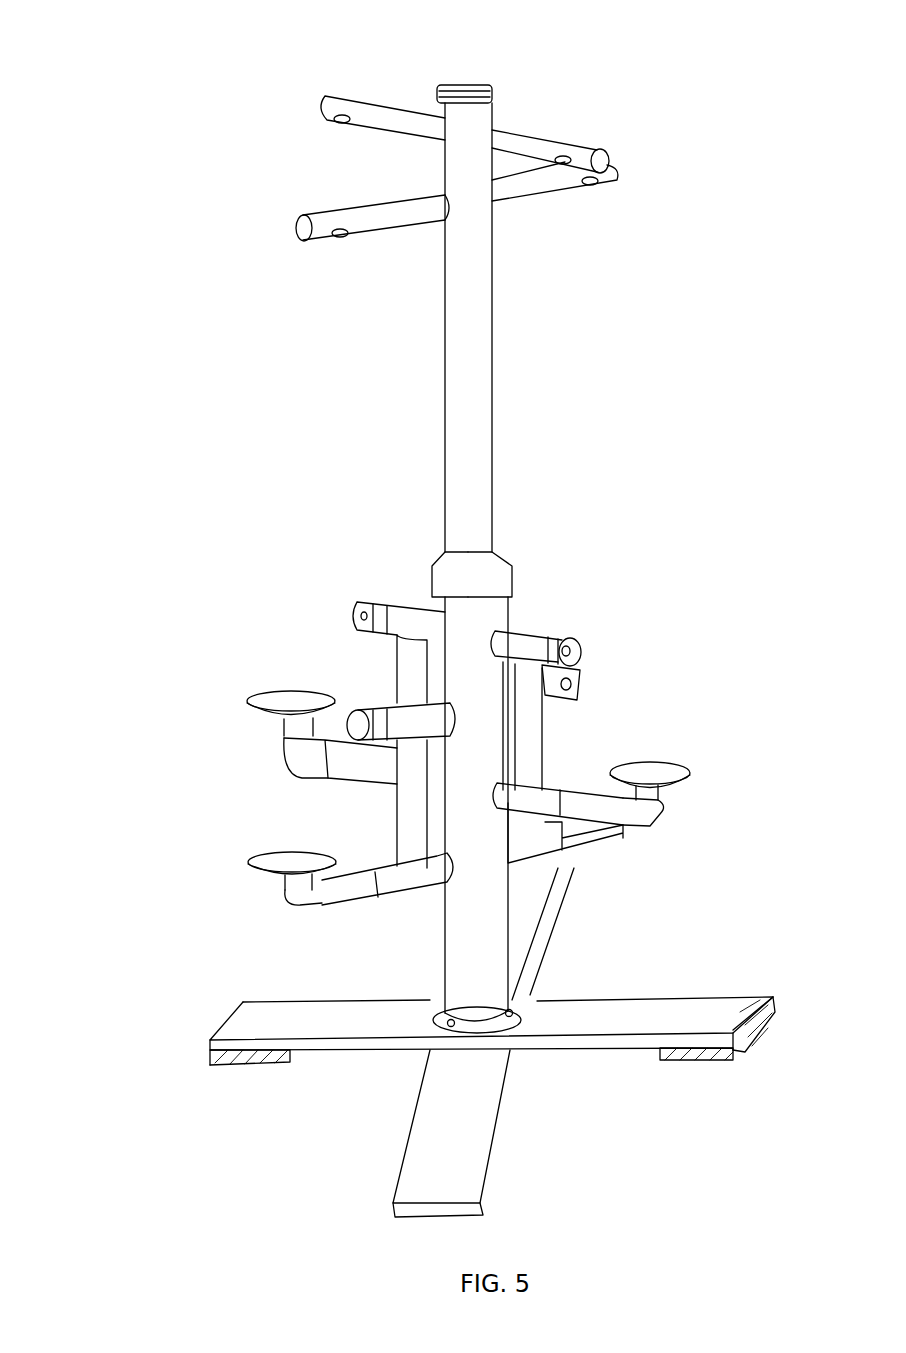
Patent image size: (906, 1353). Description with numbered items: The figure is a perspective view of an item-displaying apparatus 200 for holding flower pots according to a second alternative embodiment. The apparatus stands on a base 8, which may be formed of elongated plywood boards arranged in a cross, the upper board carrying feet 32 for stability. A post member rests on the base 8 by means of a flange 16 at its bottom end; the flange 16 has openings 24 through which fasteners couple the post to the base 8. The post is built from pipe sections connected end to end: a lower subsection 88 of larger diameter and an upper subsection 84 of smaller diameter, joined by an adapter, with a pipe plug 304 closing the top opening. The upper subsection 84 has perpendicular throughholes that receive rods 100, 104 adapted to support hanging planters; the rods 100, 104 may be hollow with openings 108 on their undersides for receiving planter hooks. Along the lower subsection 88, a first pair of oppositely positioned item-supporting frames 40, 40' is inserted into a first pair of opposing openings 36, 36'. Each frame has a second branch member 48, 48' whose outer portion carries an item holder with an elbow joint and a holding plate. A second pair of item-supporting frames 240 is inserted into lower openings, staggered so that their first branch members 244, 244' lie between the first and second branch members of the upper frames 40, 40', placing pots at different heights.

The item-displaying apparatus 200 is at (122, 72).
The base 8 is at (692, 918).
The pipe plug 304 is at (475, 85).
The upper subsection 84 is at (473, 390).
The rod 100 is at (536, 135).
The rod 104 is at (343, 207).
The openings 108 is at (340, 120).
The opening 36' is at (423, 555).
The opening 36 is at (513, 570).
The lower subsection 88 is at (478, 740).
The item-supporting frame 40' is at (377, 698).
The item-supporting frame 40 is at (556, 672).
The first branch member 244' is at (352, 694).
The first branch member 244 is at (607, 657).
The item-supporting frame 240 is at (597, 720).
The second branch member 48' is at (335, 741).
The second branch member 48 is at (591, 782).
The flange 16 is at (507, 1022).
The feet 32 is at (253, 1062).
The openings 24 is at (445, 1005).